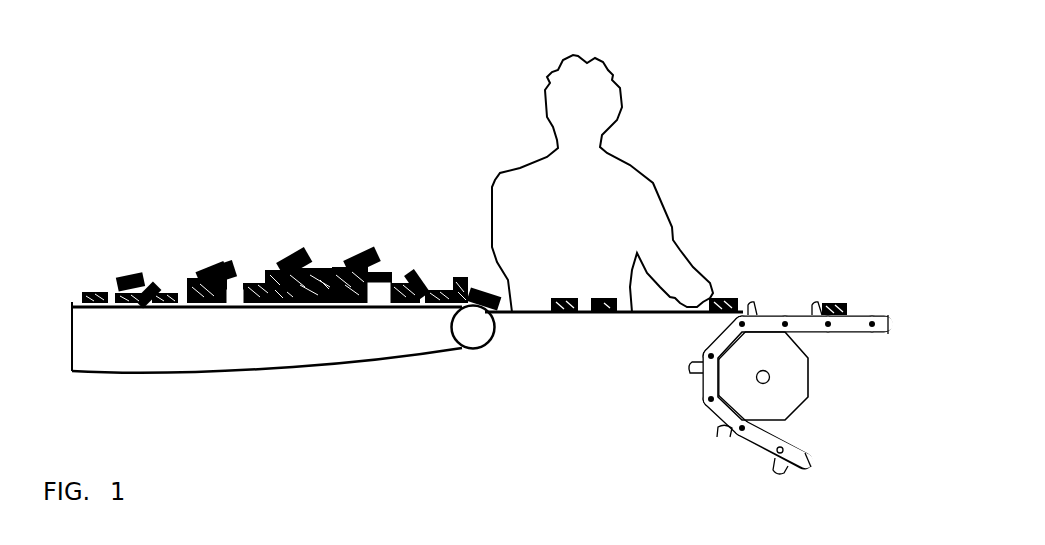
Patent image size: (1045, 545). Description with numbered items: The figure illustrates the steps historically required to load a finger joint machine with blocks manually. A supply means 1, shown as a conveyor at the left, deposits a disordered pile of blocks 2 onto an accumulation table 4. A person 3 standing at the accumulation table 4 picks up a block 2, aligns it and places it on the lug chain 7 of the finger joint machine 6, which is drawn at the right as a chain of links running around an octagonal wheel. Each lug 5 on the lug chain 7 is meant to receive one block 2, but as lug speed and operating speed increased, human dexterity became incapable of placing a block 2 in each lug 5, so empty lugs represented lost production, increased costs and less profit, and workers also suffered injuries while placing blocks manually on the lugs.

The supply means 1 is at (157, 346).
The blocks 2 is at (291, 262).
The person 3 is at (580, 219).
The accumulation table 4 is at (582, 349).
The lug 5 is at (700, 454).
The finger joint machine 6 is at (859, 407).
The lug chain 7 is at (896, 293).